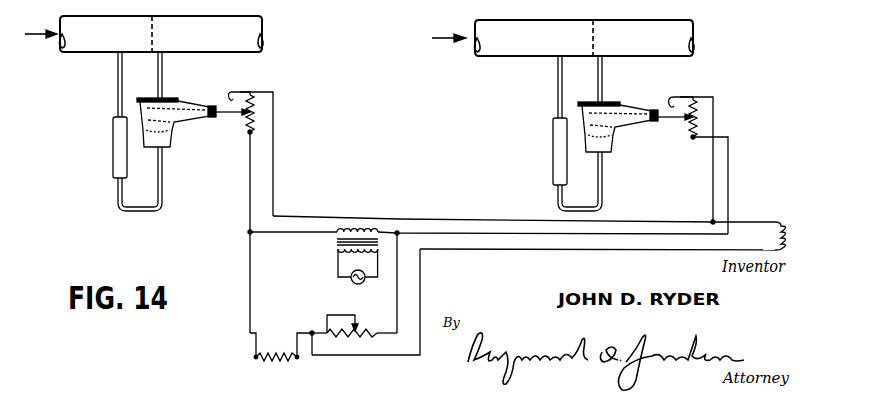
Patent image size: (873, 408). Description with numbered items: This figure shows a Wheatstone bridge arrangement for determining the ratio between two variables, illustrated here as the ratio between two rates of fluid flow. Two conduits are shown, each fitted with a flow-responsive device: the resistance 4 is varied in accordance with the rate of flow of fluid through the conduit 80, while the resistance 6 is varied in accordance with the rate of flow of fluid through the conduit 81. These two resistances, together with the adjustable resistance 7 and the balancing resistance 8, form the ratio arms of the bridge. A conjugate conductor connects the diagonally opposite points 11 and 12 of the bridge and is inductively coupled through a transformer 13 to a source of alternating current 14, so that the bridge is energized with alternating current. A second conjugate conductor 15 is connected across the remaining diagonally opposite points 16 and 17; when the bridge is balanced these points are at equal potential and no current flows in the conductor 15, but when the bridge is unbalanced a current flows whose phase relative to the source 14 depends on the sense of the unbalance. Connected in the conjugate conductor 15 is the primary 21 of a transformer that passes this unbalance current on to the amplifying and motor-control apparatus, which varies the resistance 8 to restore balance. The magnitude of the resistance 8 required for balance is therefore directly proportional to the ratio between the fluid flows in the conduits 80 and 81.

The resistance 4 is at (257, 112).
The adjustable resistance 6 is at (702, 114).
The adjustable resistance 7 is at (362, 326).
The balancing resistance 8 is at (273, 352).
The point of the bridge 11 is at (246, 232).
The point of the bridge 12 is at (397, 229).
The transformer 13 is at (335, 241).
The source of alternating current 14 is at (351, 283).
The second conjugate conductor 15 is at (470, 251).
The point of the bridge 16 is at (712, 221).
The point of the bridge 17 is at (312, 330).
The primary 21 is at (773, 234).
The conduit 80 is at (103, 52).
The conduit 81 is at (641, 57).